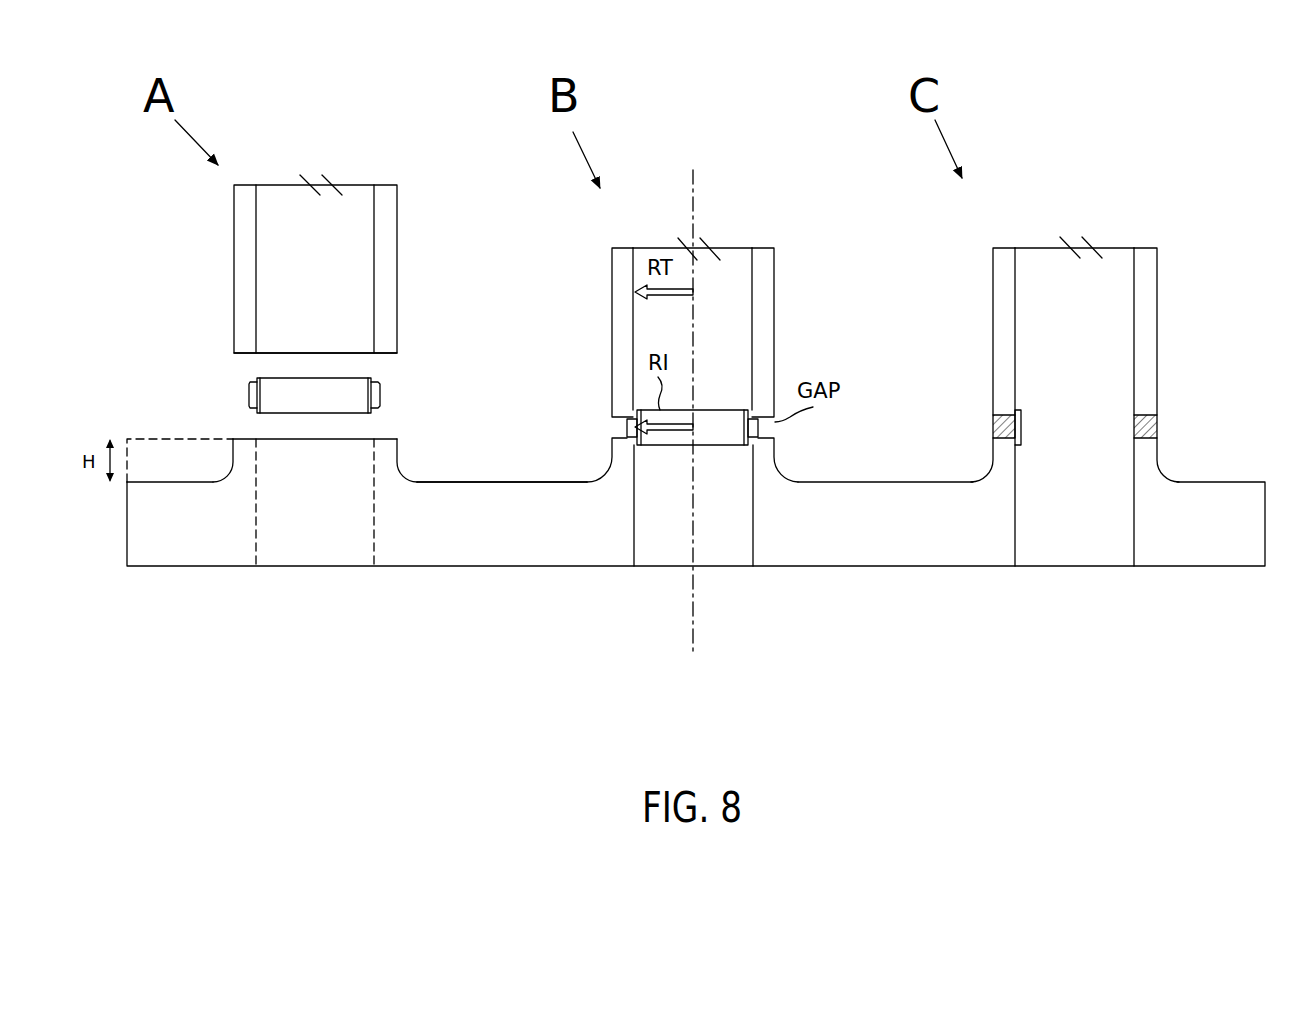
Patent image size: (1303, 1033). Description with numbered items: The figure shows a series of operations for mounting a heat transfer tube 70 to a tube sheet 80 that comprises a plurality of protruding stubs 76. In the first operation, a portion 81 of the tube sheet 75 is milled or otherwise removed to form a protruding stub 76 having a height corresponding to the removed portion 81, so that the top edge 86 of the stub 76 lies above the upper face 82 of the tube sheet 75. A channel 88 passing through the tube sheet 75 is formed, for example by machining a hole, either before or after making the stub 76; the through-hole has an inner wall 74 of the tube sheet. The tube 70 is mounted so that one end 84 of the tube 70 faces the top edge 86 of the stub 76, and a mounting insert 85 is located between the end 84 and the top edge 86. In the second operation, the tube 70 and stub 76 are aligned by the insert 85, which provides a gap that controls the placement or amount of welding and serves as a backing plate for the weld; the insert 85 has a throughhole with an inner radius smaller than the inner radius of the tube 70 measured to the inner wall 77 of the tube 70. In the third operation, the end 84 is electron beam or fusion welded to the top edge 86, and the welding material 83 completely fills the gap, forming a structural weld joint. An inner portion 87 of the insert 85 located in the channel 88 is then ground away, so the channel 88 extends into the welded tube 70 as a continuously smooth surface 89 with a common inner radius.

The heat transfer tube 70 is at (402, 270).
The inner wall of the tube sheet 74 is at (748, 510).
The tube sheet 75 is at (512, 570).
The tube stub 76 is at (405, 463).
The inner wall of the tube 77 is at (745, 390).
The tube sheet 80 is at (1210, 200).
The removed portion of the tube sheet 81 is at (180, 435).
The upper face of the tube sheet 82 is at (493, 475).
The welding material 83 is at (993, 422).
The end of the tube 84 is at (245, 358).
The mounting insert 85 is at (385, 397).
The top edge of the stub 86 is at (385, 433).
The inner portion of the insert 87 is at (1025, 423).
The channel 88 is at (308, 523).
The continuously smooth surface 89 is at (1130, 448).